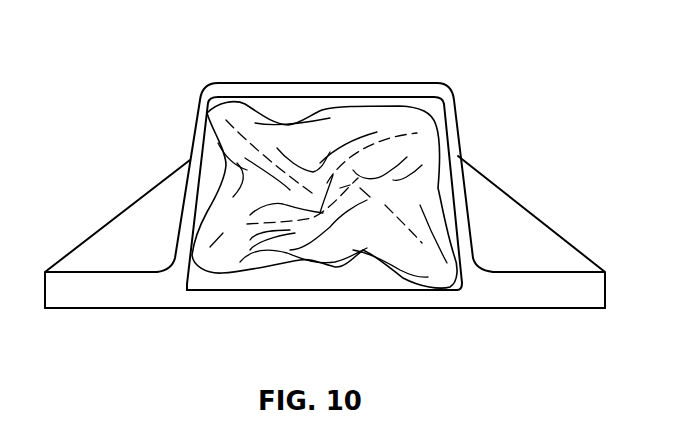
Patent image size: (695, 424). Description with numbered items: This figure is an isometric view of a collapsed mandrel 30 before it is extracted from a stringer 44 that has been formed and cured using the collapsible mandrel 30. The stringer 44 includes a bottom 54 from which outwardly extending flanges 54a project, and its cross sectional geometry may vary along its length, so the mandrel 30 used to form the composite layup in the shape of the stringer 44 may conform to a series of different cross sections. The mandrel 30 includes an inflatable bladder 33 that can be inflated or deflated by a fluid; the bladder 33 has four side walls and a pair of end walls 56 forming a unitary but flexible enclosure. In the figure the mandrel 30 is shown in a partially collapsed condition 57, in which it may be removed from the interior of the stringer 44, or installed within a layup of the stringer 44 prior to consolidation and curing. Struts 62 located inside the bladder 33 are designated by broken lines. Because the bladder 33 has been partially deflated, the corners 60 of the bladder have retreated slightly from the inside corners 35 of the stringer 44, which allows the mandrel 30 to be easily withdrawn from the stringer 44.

The collapsible mandrel 30 is at (428, 167).
The inflatable bladder 33 is at (283, 145).
The inside corners of the stringer 35 is at (207, 88).
The stringer 44 is at (167, 117).
The bottom 54 is at (136, 225).
The outwardly extending flanges 54a is at (375, 298).
The end walls 56 is at (332, 137).
The partially collapsed condition 57 is at (425, 268).
The corners of the bladder 60 is at (208, 108).
The struts 62 is at (372, 190).